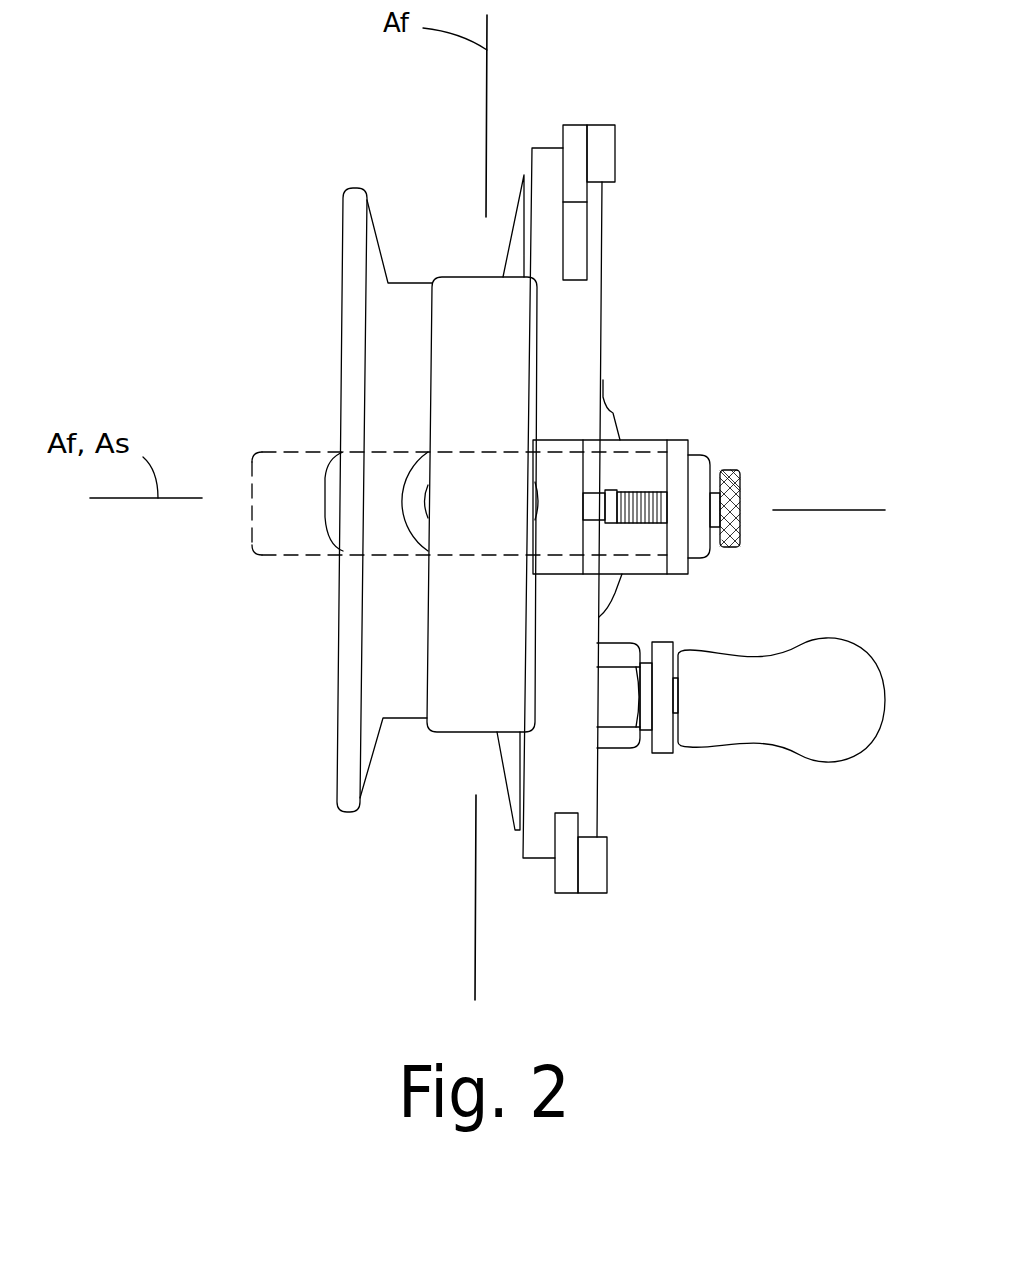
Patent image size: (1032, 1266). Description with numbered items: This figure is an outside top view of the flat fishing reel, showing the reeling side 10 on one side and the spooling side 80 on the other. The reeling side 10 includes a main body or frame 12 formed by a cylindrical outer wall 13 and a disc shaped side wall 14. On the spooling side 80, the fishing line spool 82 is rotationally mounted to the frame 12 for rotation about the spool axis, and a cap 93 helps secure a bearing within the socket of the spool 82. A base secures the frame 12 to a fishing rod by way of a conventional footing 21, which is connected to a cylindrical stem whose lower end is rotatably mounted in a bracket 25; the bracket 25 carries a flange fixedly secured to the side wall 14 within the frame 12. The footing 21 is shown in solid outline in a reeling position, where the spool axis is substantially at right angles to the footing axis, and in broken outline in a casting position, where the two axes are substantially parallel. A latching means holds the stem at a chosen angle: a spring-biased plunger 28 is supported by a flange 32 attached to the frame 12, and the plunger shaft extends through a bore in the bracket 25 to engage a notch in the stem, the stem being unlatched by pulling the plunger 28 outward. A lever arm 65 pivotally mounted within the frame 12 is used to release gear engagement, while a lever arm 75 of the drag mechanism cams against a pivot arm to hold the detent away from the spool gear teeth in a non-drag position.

The reeling side 10 is at (727, 288).
The main body or frame 12 is at (607, 366).
The cylindrical outer wall 13 is at (587, 787).
The disc shaped side wall 14 is at (597, 813).
The footing 21 is at (475, 283).
The bracket 25 is at (553, 437).
The plunger 28 is at (742, 475).
The flange 32 is at (677, 437).
The lever arm 65 is at (598, 867).
The lever arm 75 is at (608, 150).
The spooling side 80 is at (240, 281).
The fishing line spool 82 is at (338, 684).
The cap 93 is at (323, 517).